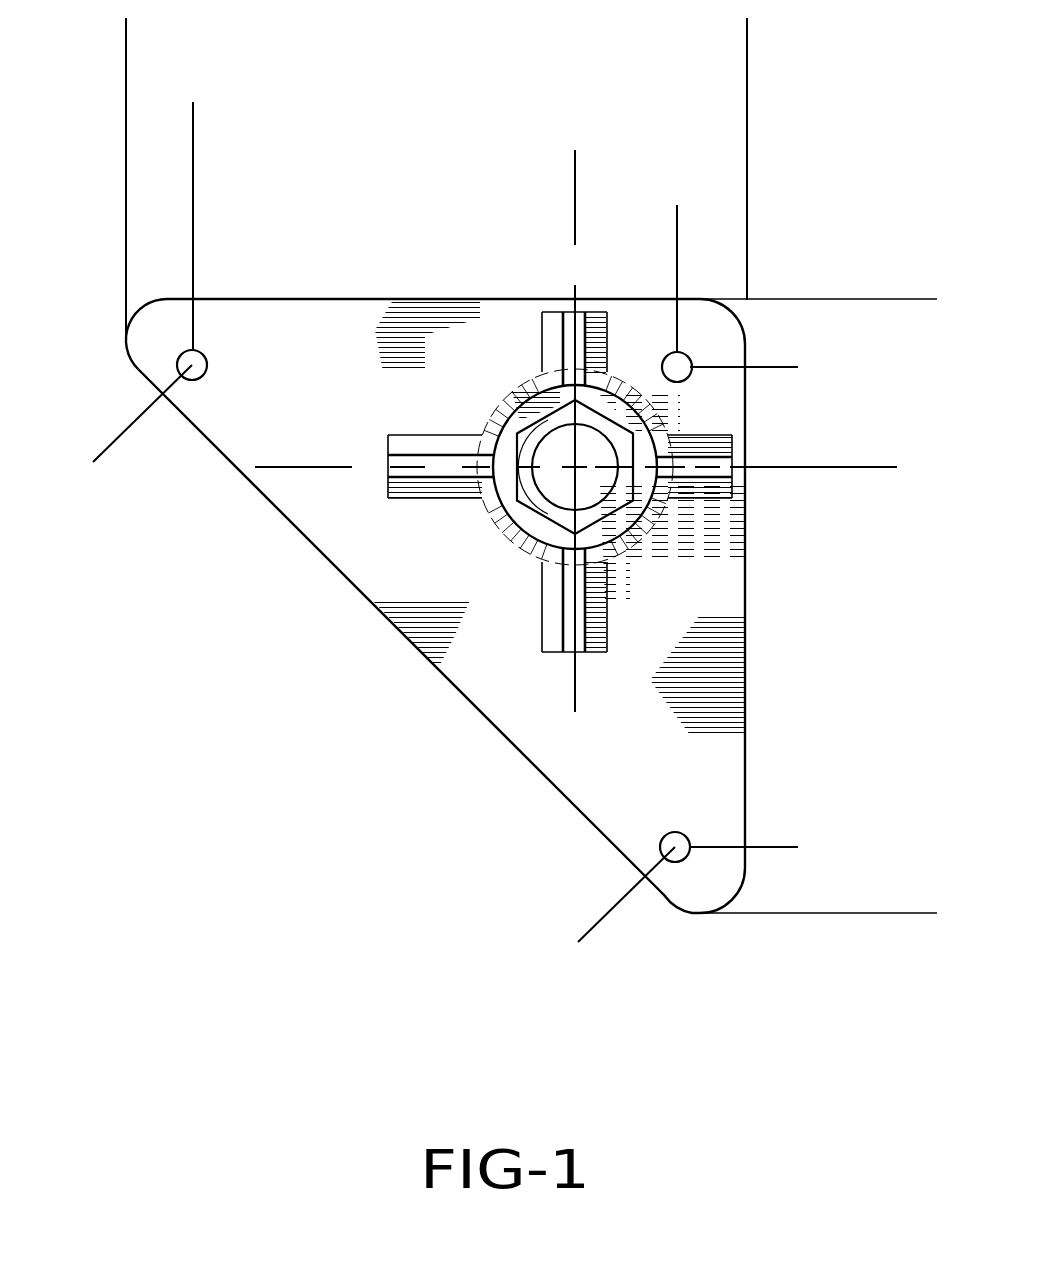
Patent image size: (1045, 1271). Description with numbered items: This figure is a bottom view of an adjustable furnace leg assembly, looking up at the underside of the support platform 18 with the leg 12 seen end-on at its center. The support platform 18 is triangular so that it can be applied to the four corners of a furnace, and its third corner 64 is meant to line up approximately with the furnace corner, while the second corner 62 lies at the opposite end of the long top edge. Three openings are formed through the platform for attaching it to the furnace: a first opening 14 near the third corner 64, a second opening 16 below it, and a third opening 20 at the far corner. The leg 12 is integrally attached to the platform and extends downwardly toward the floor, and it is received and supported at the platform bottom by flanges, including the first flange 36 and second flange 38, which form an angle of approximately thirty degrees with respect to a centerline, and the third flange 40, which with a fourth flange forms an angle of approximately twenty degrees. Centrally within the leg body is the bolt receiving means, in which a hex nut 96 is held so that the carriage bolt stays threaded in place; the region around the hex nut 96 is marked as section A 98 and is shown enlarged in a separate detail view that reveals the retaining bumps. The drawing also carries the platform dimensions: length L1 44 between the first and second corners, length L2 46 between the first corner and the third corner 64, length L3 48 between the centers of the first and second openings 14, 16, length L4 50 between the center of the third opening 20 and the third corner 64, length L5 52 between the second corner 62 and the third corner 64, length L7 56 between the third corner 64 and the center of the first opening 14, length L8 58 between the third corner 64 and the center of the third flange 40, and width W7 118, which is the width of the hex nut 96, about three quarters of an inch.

The leg 12 is at (492, 392).
The first opening 14 is at (683, 353).
The second opening 16 is at (677, 832).
The support platform 18 is at (745, 750).
The third opening 20 is at (207, 366).
The first flange 36 is at (398, 433).
The second flange 38 is at (587, 640).
The third flange 40 is at (706, 480).
The length L1 44 is at (118, 440).
The length L2 46 is at (908, 299).
The length L3 48 is at (783, 367).
The length L4 50 is at (747, 178).
The length L5 52 is at (126, 47).
The length L7 56 is at (677, 233).
The length L8 58 is at (843, 299).
The second corner 62 is at (125, 338).
The third corner 64 is at (733, 312).
The hex nut 96 is at (562, 515).
The section A 98 is at (505, 493).
The width W7 118 is at (515, 433).
The section A is at (505, 440).